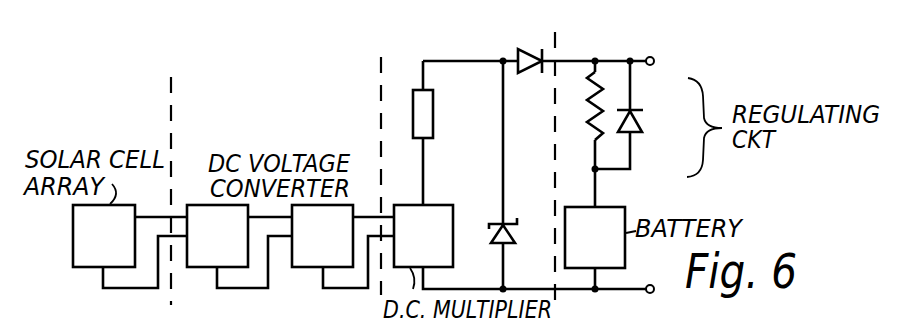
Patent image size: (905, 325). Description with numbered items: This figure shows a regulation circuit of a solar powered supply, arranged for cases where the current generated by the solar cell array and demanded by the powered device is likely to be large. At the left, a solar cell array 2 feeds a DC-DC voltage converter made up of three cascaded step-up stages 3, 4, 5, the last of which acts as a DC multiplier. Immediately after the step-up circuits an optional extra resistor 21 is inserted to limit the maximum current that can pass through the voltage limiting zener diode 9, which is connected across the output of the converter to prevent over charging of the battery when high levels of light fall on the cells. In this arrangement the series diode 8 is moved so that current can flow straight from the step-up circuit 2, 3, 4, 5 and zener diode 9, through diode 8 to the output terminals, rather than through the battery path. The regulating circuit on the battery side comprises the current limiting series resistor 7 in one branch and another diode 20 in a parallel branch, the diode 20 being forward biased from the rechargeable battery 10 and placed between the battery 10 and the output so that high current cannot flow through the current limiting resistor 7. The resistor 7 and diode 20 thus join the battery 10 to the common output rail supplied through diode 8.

The solar cell array 2 is at (90, 247).
The DC-DC voltage converter 3 is at (204, 247).
The DC-DC voltage converter 4 is at (309, 247).
The DC-DC voltage converter 5 is at (410, 247).
The series resistor 7 is at (590, 113).
The series diode 8 is at (528, 49).
The zener diode 9 is at (496, 220).
The rechargeable battery 10 is at (582, 247).
The diode 20 is at (641, 126).
The extra resistor 21 is at (433, 110).